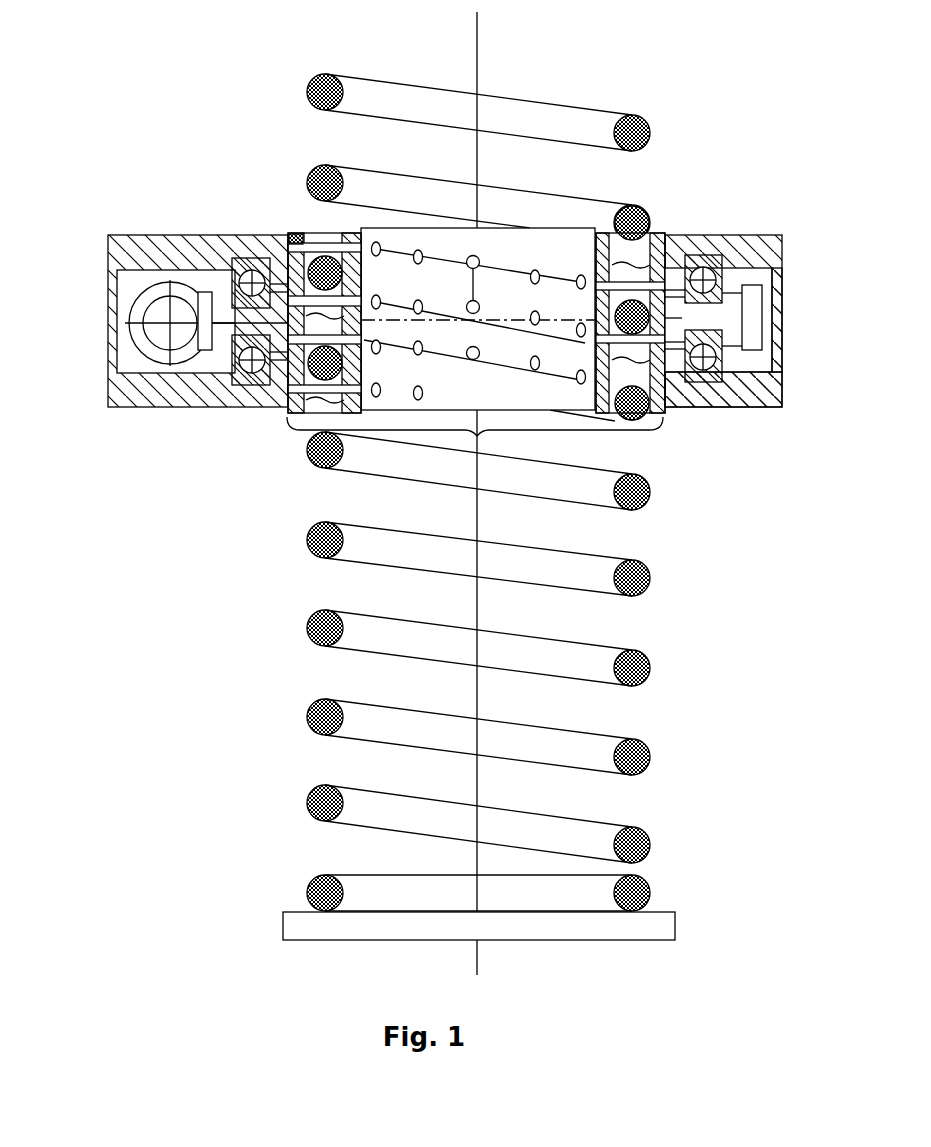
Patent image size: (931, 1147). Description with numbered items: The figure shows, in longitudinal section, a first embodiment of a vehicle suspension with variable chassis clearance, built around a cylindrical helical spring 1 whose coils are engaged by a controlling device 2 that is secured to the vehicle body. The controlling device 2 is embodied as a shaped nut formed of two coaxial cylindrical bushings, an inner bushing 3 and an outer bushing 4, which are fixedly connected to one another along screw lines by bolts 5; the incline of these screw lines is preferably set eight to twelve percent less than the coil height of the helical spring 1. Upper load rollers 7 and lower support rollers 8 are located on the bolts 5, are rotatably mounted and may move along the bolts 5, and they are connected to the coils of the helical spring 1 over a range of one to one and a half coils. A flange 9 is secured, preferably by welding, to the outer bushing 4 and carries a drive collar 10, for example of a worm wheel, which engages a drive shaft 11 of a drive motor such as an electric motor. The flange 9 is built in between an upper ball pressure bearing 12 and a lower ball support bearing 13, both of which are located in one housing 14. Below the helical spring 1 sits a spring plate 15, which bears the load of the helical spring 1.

The cylindrical helical spring 1 is at (638, 117).
The controlling device 2 is at (478, 434).
The inner bushing 3 is at (598, 235).
The outer bushing 4 is at (293, 240).
The bolts 5 is at (320, 243).
The upper load rollers 7 is at (660, 228).
The lower support rollers 8 is at (668, 372).
The flange 9 is at (220, 333).
The drive collar 10 is at (752, 318).
The drive shaft 11 is at (160, 332).
The upper ball pressure bearing 12 is at (235, 262).
The lower ball support bearing 13 is at (745, 378).
The housing 14 is at (778, 372).
The spring plate 15 is at (648, 923).